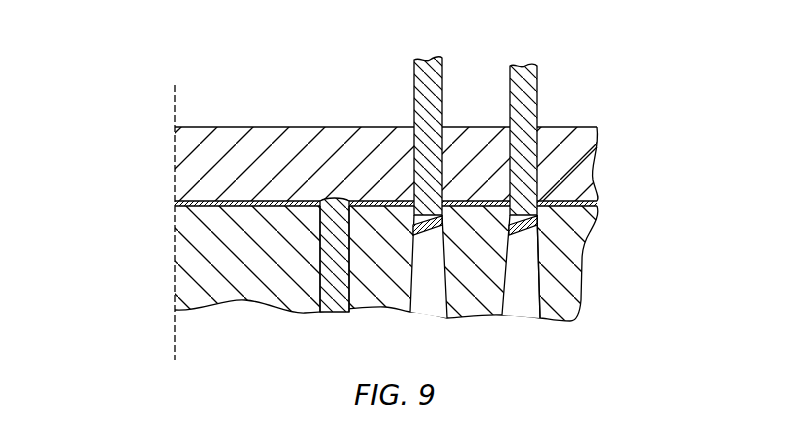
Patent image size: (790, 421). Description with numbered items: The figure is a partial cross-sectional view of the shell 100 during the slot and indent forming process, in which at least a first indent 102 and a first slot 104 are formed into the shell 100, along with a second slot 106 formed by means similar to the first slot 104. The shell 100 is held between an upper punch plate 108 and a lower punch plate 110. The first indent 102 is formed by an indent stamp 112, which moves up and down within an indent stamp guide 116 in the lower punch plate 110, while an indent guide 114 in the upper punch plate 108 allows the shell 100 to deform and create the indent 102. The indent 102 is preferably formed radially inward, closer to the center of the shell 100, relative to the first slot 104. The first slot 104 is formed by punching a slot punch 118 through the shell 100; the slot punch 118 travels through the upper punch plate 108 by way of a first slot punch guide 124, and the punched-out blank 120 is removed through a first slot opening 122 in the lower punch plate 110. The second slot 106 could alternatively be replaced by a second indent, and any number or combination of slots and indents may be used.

The shell 100 is at (118, 164).
The first indent 102 is at (321, 201).
The first slot 104 is at (550, 190).
The second slot 106 is at (445, 195).
The upper punch plate 108 is at (215, 152).
The lower punch plate 110 is at (213, 293).
The indent stamp 112 is at (332, 300).
The indent guide 114 is at (348, 201).
The indent stamp guide 116 is at (352, 282).
The slot punch 118 is at (520, 70).
The blank 120 is at (527, 220).
The first slot opening 122 is at (540, 252).
The first slot punch guide 124 is at (558, 142).